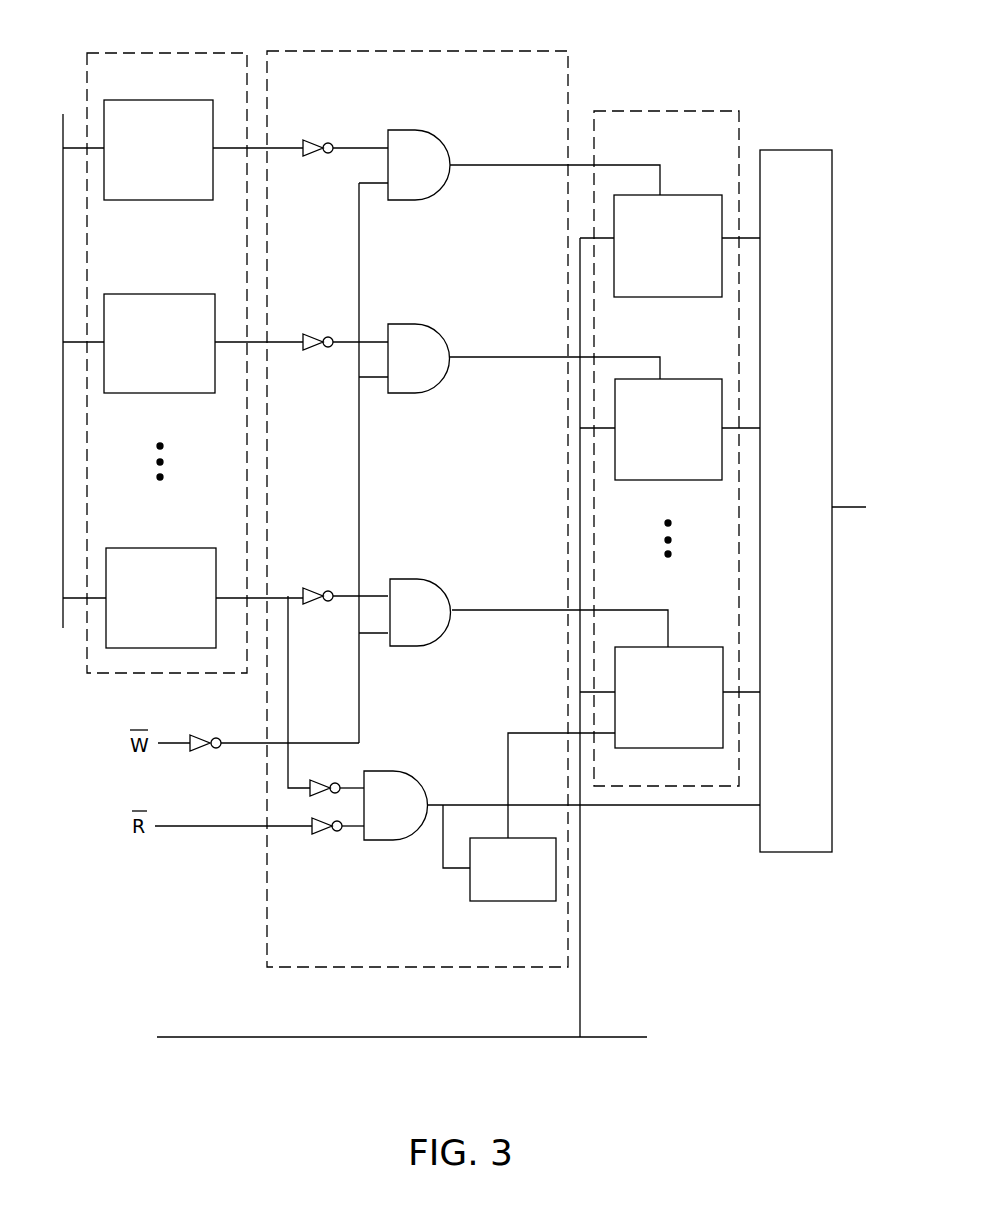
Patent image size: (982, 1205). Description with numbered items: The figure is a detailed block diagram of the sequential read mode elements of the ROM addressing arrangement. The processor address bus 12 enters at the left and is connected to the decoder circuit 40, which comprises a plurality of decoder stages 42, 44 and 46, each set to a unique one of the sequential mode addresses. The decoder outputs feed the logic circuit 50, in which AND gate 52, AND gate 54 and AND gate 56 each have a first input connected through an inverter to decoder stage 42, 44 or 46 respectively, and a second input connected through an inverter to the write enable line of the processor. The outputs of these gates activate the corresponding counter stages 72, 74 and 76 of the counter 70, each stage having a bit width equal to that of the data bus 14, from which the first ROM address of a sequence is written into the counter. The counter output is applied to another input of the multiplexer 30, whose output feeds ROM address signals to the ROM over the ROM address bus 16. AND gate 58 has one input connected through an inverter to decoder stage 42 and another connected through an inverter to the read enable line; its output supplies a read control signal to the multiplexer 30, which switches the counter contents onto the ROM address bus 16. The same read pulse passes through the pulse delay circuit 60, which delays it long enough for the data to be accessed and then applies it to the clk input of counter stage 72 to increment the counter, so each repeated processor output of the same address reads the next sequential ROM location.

The processor address bus 12 is at (63, 291).
The data bus 14 is at (343, 1037).
The ROM address bus 16 is at (851, 506).
The multiplexer 30 is at (793, 150).
The decoder circuit 40 is at (120, 52).
The decoder stage 42 is at (175, 548).
The decoder stage 44 is at (160, 385).
The decoder stage 46 is at (176, 100).
The logic circuit 50 is at (358, 50).
The AND gate 52 is at (422, 590).
The AND gate 54 is at (426, 334).
The AND gate 56 is at (420, 140).
The AND gate 58 is at (408, 782).
The pulse delay circuit 60 is at (527, 900).
The counter 70 is at (648, 110).
The counter stage 72 is at (688, 647).
The counter stage 74 is at (690, 378).
The counter stage 76 is at (691, 195).